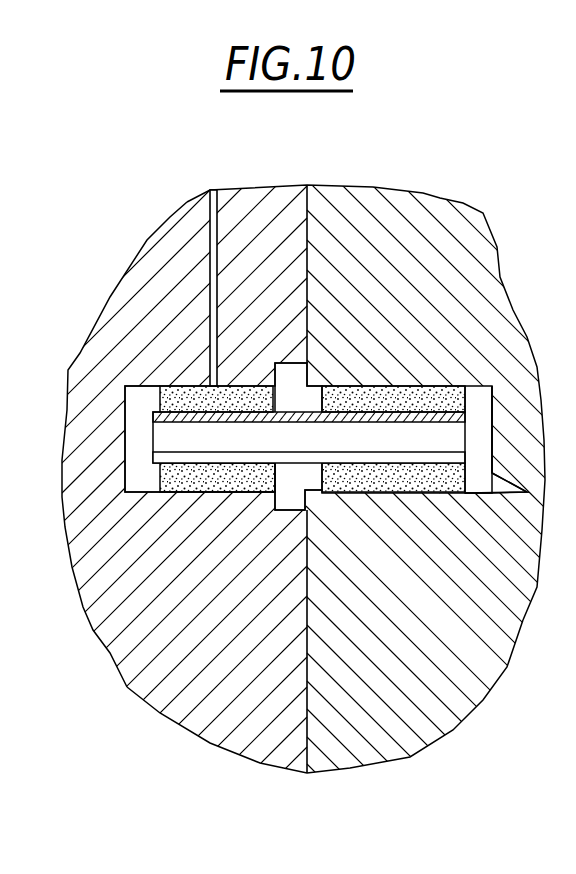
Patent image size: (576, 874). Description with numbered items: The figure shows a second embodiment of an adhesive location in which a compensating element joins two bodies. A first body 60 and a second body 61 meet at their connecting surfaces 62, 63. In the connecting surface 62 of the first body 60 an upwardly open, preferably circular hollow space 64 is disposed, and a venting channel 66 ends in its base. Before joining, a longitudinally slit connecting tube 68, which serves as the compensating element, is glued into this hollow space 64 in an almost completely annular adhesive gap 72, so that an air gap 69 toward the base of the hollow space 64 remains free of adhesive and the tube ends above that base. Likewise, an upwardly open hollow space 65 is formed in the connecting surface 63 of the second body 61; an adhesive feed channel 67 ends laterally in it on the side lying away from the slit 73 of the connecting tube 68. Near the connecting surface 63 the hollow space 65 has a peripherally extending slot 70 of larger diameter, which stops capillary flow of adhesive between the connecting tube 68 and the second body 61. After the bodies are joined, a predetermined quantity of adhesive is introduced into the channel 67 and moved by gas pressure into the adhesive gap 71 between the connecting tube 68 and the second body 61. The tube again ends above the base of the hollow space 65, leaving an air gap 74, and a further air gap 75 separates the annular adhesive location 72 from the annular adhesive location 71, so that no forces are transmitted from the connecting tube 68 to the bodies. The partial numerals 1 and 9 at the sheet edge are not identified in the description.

The first body 60 is at (424, 196).
The second body 61 is at (172, 227).
The connecting surface 62 is at (311, 203).
The connecting surface 63 is at (305, 233).
The hollow space 64 is at (436, 381).
The hollow space 65 is at (182, 384).
The venting channel 66 is at (526, 492).
The adhesive feed channel 67 is at (215, 190).
The connecting tube 68 is at (478, 423).
The air gap 69 is at (505, 468).
The slot 70 is at (280, 498).
The adhesive gap 71 is at (156, 402).
The adhesive gap 72 is at (317, 474).
The slit 73 is at (176, 458).
The air gap 74 is at (147, 477).
The air gap 75 is at (292, 386).
The device 1 is at (1, 398).
The member 9 is at (4, 543).